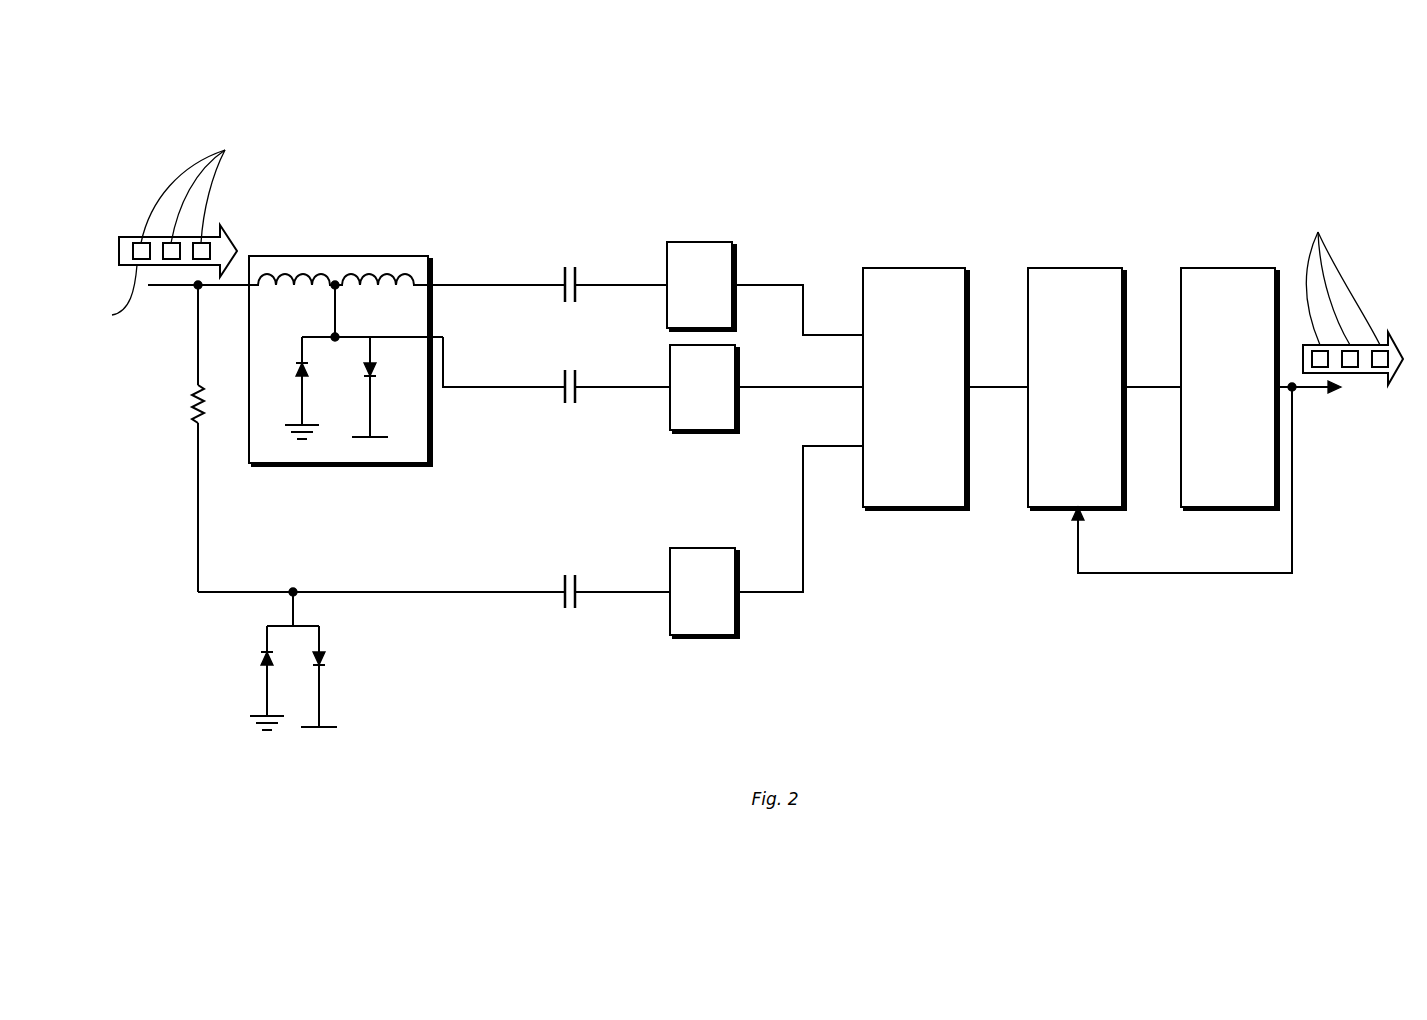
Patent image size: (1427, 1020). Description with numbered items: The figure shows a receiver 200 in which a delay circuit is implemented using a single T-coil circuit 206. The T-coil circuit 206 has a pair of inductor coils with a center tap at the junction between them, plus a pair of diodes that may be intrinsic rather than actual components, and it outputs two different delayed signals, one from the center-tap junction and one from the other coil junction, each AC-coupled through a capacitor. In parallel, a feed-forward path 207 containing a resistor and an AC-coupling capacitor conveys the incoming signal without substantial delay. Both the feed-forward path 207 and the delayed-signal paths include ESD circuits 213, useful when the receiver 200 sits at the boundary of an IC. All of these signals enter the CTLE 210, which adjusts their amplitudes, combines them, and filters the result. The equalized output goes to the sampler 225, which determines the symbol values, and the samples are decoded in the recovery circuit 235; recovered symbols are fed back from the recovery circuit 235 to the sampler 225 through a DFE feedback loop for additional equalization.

The receiver 200 is at (859, 74).
The T-coil circuit 206 is at (349, 256).
The feed-forward path 207 is at (345, 583).
The ESD circuits 213 is at (687, 317).
The CTLE 210 is at (900, 407).
The sampler 225 is at (1061, 407).
The recovery circuit 235 is at (1214, 418).